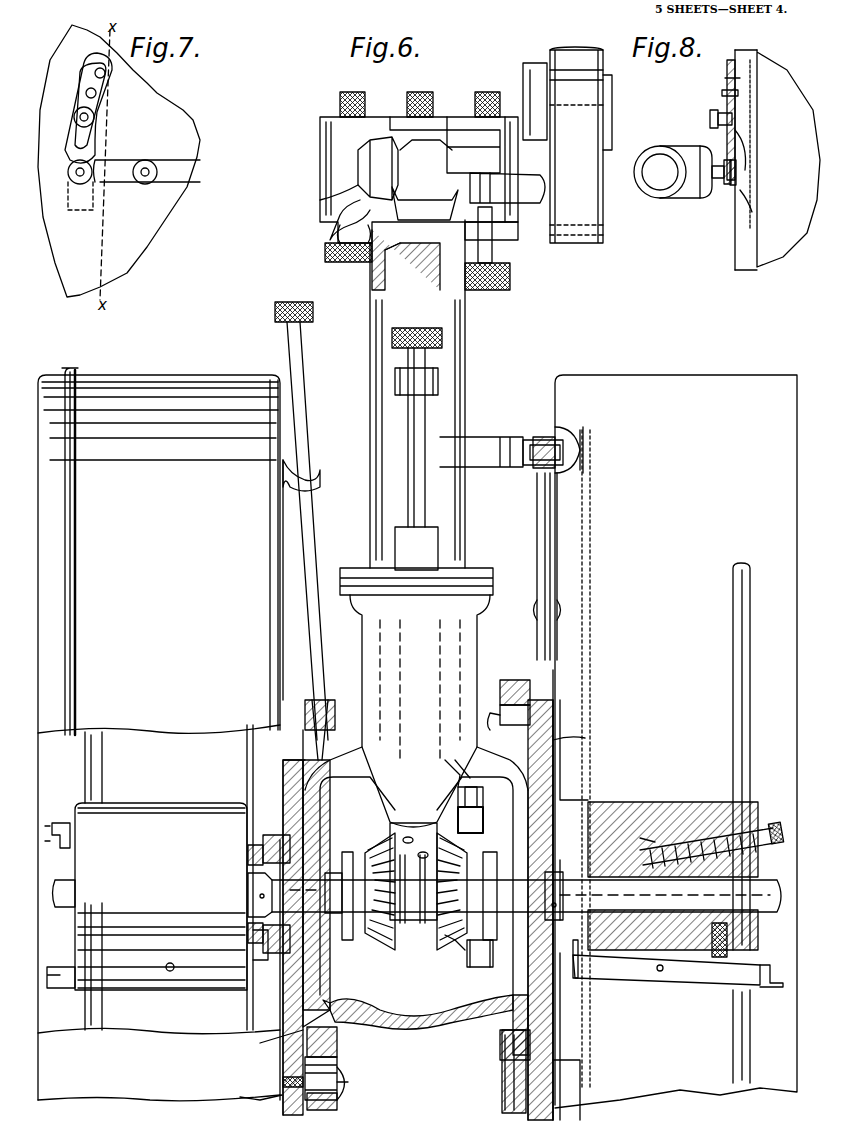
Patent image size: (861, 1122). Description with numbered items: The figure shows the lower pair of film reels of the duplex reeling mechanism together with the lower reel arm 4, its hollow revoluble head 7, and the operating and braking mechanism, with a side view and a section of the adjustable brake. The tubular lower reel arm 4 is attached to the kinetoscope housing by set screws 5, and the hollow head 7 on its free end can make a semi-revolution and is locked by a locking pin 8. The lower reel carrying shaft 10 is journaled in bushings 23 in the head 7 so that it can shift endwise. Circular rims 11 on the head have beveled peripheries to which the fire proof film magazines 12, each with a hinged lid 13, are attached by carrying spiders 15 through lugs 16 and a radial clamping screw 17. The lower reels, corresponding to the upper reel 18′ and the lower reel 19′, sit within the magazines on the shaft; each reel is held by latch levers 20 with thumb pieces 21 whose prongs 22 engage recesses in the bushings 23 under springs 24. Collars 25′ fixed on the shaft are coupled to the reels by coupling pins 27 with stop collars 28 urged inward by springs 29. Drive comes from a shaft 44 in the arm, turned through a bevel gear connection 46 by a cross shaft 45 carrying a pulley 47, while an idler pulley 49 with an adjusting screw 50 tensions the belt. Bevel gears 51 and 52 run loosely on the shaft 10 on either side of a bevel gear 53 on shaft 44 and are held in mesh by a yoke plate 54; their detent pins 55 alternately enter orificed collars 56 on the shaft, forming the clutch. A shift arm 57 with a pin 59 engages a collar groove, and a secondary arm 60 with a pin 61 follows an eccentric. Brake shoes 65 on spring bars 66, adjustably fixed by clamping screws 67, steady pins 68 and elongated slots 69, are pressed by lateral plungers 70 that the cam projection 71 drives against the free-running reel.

In FIG. 8, the lower reel arm 4 is at (673, 172).
In FIG. 6, the lower reel arm 4 is at (467, 345).
In FIG. 6, the set screws 5 is at (325, 248).
In FIG. 6, the hollow revoluble head 7 is at (408, 1042).
In FIG. 6, the locking pins 8 is at (408, 418).
In FIG. 6, the lower reel carrying shaft 10 is at (55, 892).
In FIG. 6, the circular rims 11 is at (426, 894).
In FIG. 7, the film magazines 12 is at (140, 250).
In FIG. 8, the film magazines 12 is at (733, 246).
In FIG. 6, the film magazines 12 is at (417, 741).
In FIG. 6, the hinged door or lid 13 is at (55, 628).
In FIG. 7, the carrying spiders 15 is at (122, 180).
In FIG. 8, the carrying spiders 15 is at (725, 160).
In FIG. 6, the carrying spiders 15 is at (285, 583).
In FIG. 6, the lugs 16 is at (298, 703).
In FIG. 6, the clamping screw 17 is at (305, 553).
In FIG. 6, the upper film reel 18′ is at (160, 810).
In FIG. 8, the lower film reel 19′ is at (778, 145).
In FIG. 6, the lower film reel 19′ is at (592, 553).
In FIG. 6, the latch levers 20 is at (675, 975).
In FIG. 6, the thumb pieces 21 is at (58, 978).
In FIG. 6, the prongs 22 is at (253, 943).
In FIG. 6, the bushings 23 is at (248, 855).
In FIG. 6, the springs 24 is at (727, 938).
In FIG. 6, the collars 25′ is at (248, 898).
In FIG. 6, the coupling pins 27 is at (52, 830).
In FIG. 6, the stop collars 28 is at (665, 830).
In FIG. 6, the springs 29 is at (783, 840).
In FIG. 6, the shaft 44 is at (383, 285).
In FIG. 6, the cross shaft 45 is at (420, 178).
In FIG. 6, the bevel gear connection 46 is at (320, 205).
In FIG. 6, the pulley 47 is at (541, 146).
In FIG. 6, the idler pulley 49 is at (576, 64).
In FIG. 6, the adjusting screw 50 is at (510, 275).
In FIG. 6, the bevel gear 51 is at (372, 952).
In FIG. 6, the bevel gear 52 is at (440, 950).
In FIG. 6, the bevel gear 53 is at (390, 833).
In FIG. 6, the yoke plate 54 is at (480, 835).
In FIG. 6, the detent pins 55 is at (353, 870).
In FIG. 6, the orificed collars 56 is at (333, 913).
In FIG. 6, the shift arm 57 is at (475, 967).
In FIG. 6, the stud or pin 59 is at (450, 945).
In FIG. 6, the secondary arm 60 is at (485, 815).
In FIG. 6, the stud or pin 61 is at (445, 760).
In FIG. 7, the brake shoes 65 is at (88, 212).
In FIG. 8, the brake shoes 65 is at (752, 210).
In FIG. 6, the brake shoes 65 is at (585, 462).
In FIG. 7, the spring bars 66 is at (90, 137).
In FIG. 8, the spring bars 66 is at (740, 155).
In FIG. 6, the spring bars 66 is at (585, 440).
In FIG. 7, the clamping screws 67 is at (94, 117).
In FIG. 8, the clamping screws 67 is at (710, 118).
In FIG. 7, the steady pins 68 is at (96, 95).
In FIG. 8, the steady pins 68 is at (722, 93).
In FIG. 7, the elongated slots 69 is at (105, 75).
In FIG. 8, the elongated slots 69 is at (725, 78).
In FIG. 7, the lateral plungers 70 is at (68, 172).
In FIG. 8, the lateral plungers 70 is at (717, 185).
In FIG. 6, the lateral plungers 70 is at (543, 437).
In FIG. 8, the cam projection 71 is at (692, 198).
In FIG. 6, the cam projection 71 is at (500, 450).